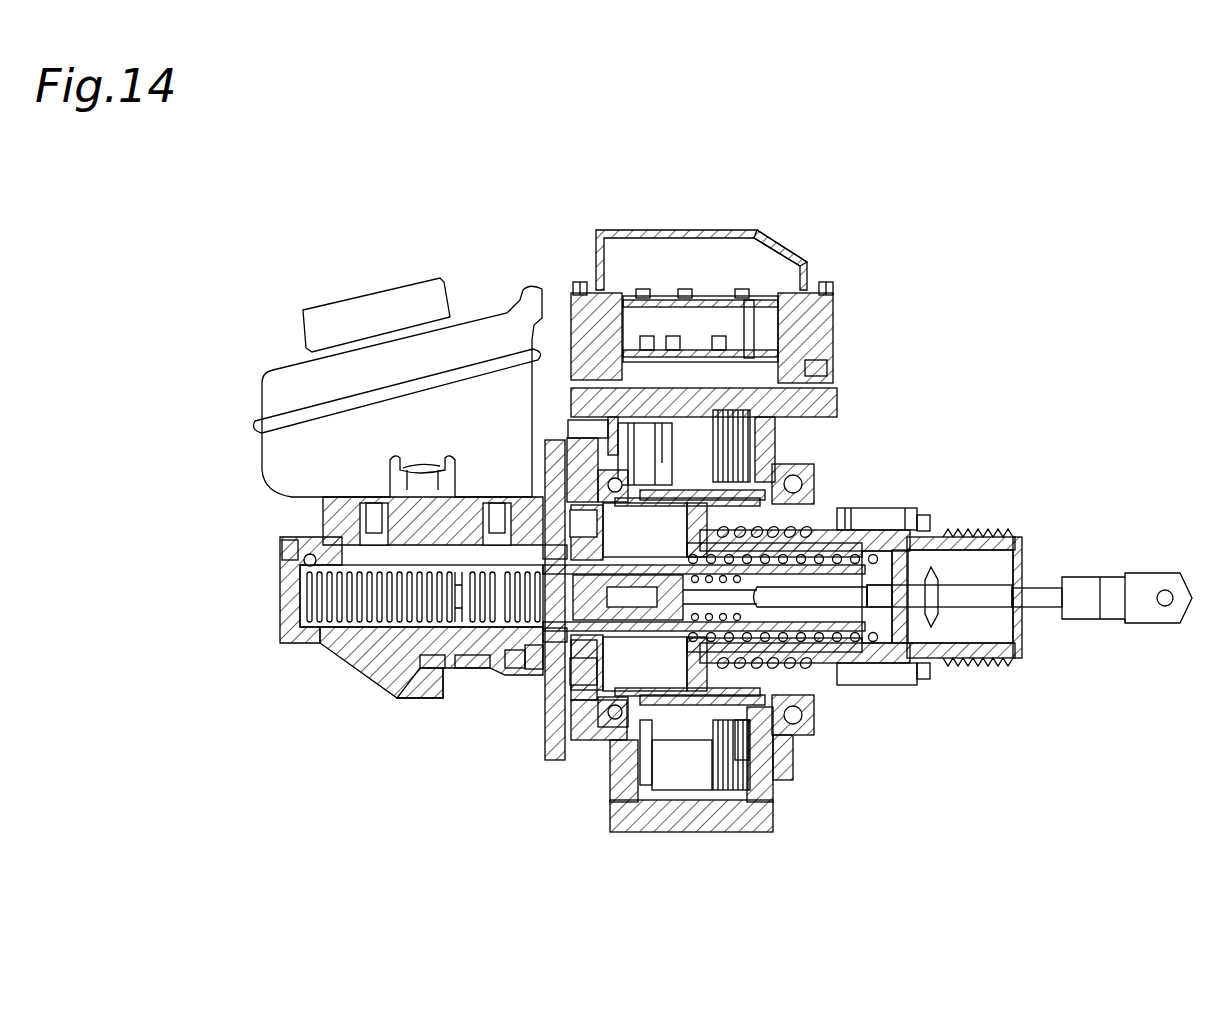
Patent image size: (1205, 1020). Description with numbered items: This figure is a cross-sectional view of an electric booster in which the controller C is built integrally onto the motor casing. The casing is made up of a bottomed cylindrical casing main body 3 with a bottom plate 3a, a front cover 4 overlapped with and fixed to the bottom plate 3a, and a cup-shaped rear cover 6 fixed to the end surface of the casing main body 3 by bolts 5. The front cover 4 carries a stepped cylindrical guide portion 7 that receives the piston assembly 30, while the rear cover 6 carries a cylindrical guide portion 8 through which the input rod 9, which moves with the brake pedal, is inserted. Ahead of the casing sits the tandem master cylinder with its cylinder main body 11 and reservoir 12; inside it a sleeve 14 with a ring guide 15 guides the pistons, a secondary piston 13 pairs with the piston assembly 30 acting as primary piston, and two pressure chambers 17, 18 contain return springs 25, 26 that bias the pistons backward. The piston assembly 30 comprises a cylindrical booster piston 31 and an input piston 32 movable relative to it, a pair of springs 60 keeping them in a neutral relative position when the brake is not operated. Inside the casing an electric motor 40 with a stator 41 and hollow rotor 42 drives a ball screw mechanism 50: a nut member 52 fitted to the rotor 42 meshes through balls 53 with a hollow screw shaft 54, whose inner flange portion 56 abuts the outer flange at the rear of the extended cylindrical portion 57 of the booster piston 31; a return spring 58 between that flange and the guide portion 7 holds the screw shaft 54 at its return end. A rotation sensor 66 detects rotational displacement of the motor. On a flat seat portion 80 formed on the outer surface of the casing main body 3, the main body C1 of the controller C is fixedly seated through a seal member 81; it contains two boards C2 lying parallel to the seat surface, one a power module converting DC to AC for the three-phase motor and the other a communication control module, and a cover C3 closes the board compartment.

The casing main body 3 is at (690, 822).
The bottom plate 3a is at (548, 548).
The front cover 4 is at (556, 762).
The bolts 5 is at (857, 526).
The rear cover 6 is at (788, 745).
The cylindrical guide portion 7 is at (606, 690).
The cylindrical guide portion 8 is at (942, 535).
The input rod 9 is at (992, 600).
The cylinder main body 11 is at (322, 540).
The reservoir 12 is at (277, 390).
The secondary piston 13 is at (426, 672).
The sleeve 14 is at (442, 656).
The ring guide 15 is at (545, 655).
The pressure chamber 17 is at (467, 660).
The pressure chamber 18 is at (305, 580).
The return spring 25 is at (516, 655).
The return spring 26 is at (305, 646).
The piston assembly 30 is at (636, 556).
The booster piston 31 is at (606, 742).
The input piston 32 is at (640, 768).
The electric motor 40 is at (676, 420).
The stator 41 is at (770, 445).
The rotor 42 is at (805, 478).
The ball screw mechanism 50 is at (848, 512).
The nut member 52 is at (798, 666).
The balls 53 is at (805, 648).
The screw shaft 54 is at (882, 662).
The inner flange portion 56 is at (910, 557).
The extended cylindrical portion 57 is at (916, 656).
The return spring 58 is at (912, 530).
The pair of springs 60 is at (742, 745).
The rotation sensor 66 is at (548, 562).
The seat portion 80 is at (758, 335).
The seal member 81 is at (822, 368).
The controller C is at (594, 238).
The main body C1 is at (818, 335).
The boards C2 is at (700, 335).
The cover C3 is at (790, 258).